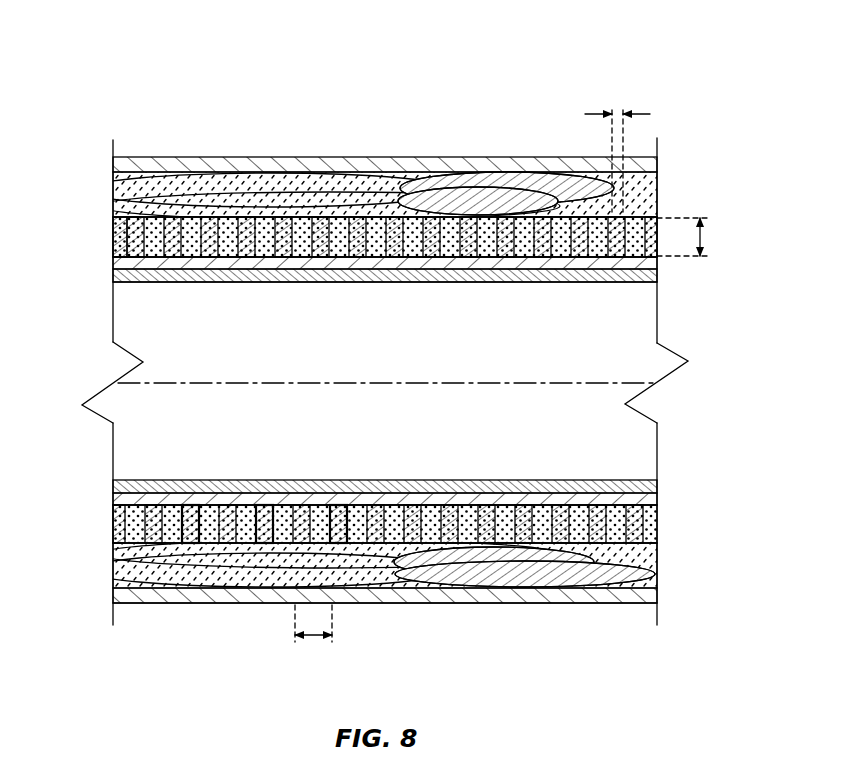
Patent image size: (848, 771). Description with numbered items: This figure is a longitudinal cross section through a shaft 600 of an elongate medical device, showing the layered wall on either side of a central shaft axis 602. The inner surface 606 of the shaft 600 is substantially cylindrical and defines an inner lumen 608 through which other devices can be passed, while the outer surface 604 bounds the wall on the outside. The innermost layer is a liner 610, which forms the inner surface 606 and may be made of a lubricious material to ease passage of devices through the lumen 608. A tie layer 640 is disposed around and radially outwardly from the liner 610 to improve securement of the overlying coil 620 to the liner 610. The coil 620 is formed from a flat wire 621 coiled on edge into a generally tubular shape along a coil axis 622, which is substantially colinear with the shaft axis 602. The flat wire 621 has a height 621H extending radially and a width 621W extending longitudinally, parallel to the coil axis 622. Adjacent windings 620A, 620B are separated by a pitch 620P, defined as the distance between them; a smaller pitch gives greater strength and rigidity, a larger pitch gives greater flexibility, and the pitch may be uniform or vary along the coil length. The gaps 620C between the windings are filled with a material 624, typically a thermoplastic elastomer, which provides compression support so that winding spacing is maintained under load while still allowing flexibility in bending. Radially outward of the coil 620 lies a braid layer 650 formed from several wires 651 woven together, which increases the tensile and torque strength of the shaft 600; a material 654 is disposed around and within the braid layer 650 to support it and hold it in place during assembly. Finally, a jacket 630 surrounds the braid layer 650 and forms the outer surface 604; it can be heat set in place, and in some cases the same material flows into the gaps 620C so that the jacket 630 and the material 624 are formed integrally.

The shaft 600 is at (285, 58).
The shaft axis 602 is at (200, 383).
The outer surface 604 is at (428, 157).
The inner surface 606 is at (607, 480).
The inner lumen 608 is at (613, 440).
The liner 610 is at (153, 278).
The coil 620 is at (305, 233).
The winding 620A is at (282, 547).
The winding 620B is at (347, 527).
The gaps 620C is at (203, 545).
The pitch 620P is at (312, 640).
The flat wire 621 is at (360, 214).
The width 621W is at (617, 112).
The height 621H is at (705, 237).
The coil axis 622 is at (243, 383).
The material 624 is at (127, 227).
The jacket 630 is at (490, 165).
The tie layer 640 is at (216, 217).
The braid layer 650 is at (503, 580).
The wires 651 is at (547, 578).
The material 654 is at (127, 195).